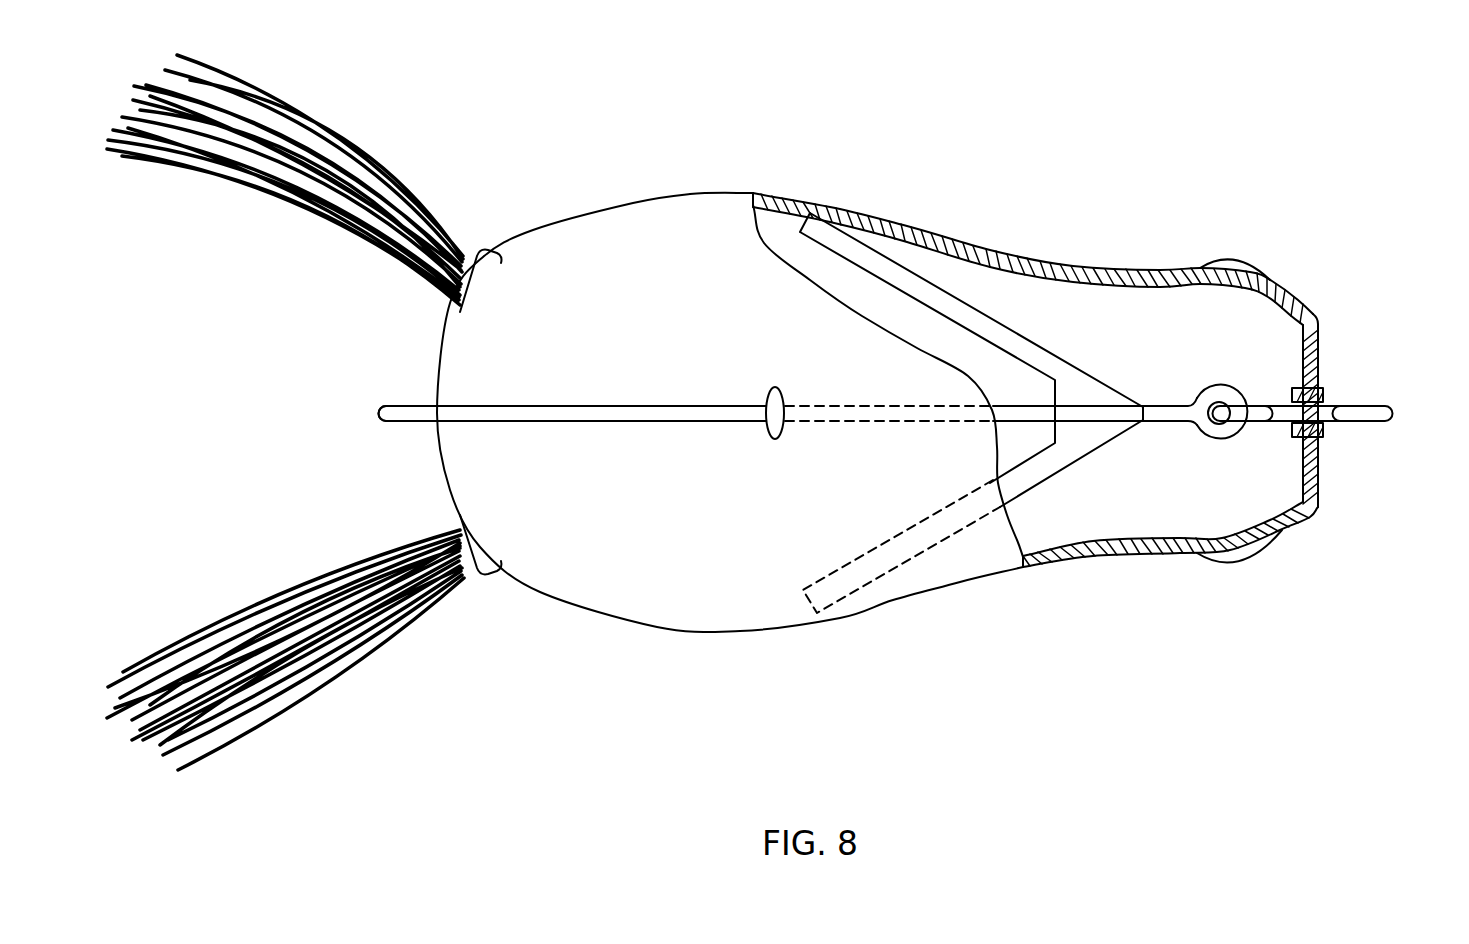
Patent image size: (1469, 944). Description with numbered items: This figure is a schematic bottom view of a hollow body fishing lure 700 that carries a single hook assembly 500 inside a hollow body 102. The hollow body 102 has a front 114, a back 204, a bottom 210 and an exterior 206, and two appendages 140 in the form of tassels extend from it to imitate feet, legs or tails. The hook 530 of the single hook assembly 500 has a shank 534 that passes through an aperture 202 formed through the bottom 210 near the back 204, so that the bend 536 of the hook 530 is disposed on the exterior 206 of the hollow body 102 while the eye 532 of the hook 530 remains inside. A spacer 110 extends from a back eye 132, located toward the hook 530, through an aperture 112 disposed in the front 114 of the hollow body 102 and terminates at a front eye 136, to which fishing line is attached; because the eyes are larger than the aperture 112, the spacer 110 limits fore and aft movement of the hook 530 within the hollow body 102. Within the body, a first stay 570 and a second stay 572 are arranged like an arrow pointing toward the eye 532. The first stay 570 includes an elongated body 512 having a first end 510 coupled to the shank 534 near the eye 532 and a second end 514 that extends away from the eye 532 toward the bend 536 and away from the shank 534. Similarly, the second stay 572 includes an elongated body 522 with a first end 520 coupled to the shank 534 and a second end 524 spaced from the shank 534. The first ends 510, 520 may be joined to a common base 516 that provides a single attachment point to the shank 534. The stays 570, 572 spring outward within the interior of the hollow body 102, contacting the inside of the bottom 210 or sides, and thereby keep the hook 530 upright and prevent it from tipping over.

The hollow body fishing lure 700 is at (952, 82).
The appendages 140 is at (332, 116).
The exterior 206 is at (697, 188).
The back 204 is at (447, 353).
The aperture 202 is at (783, 393).
The bottom 210 is at (705, 548).
The shank 534 is at (608, 412).
The bend 536 is at (377, 412).
The second end 524 is at (803, 592).
The second end 514 is at (806, 205).
The hollow body 102 is at (1180, 264).
The elongated body 522 is at (1018, 475).
The front 114 is at (1320, 487).
The aperture 112 is at (1311, 391).
The first end 510 is at (1087, 370).
The elongated body 512 is at (1027, 330).
The first stay 570 is at (1057, 360).
The base 516 is at (1122, 407).
The first end 520 is at (1092, 440).
The second stay 572 is at (1067, 467).
The hook 530 is at (1180, 429).
The single hook assembly 500 is at (1234, 381).
The eye 532 is at (1218, 433).
The back eye 132 is at (1253, 410).
The front eye 136 is at (1373, 412).
The spacer 110 is at (1369, 398).